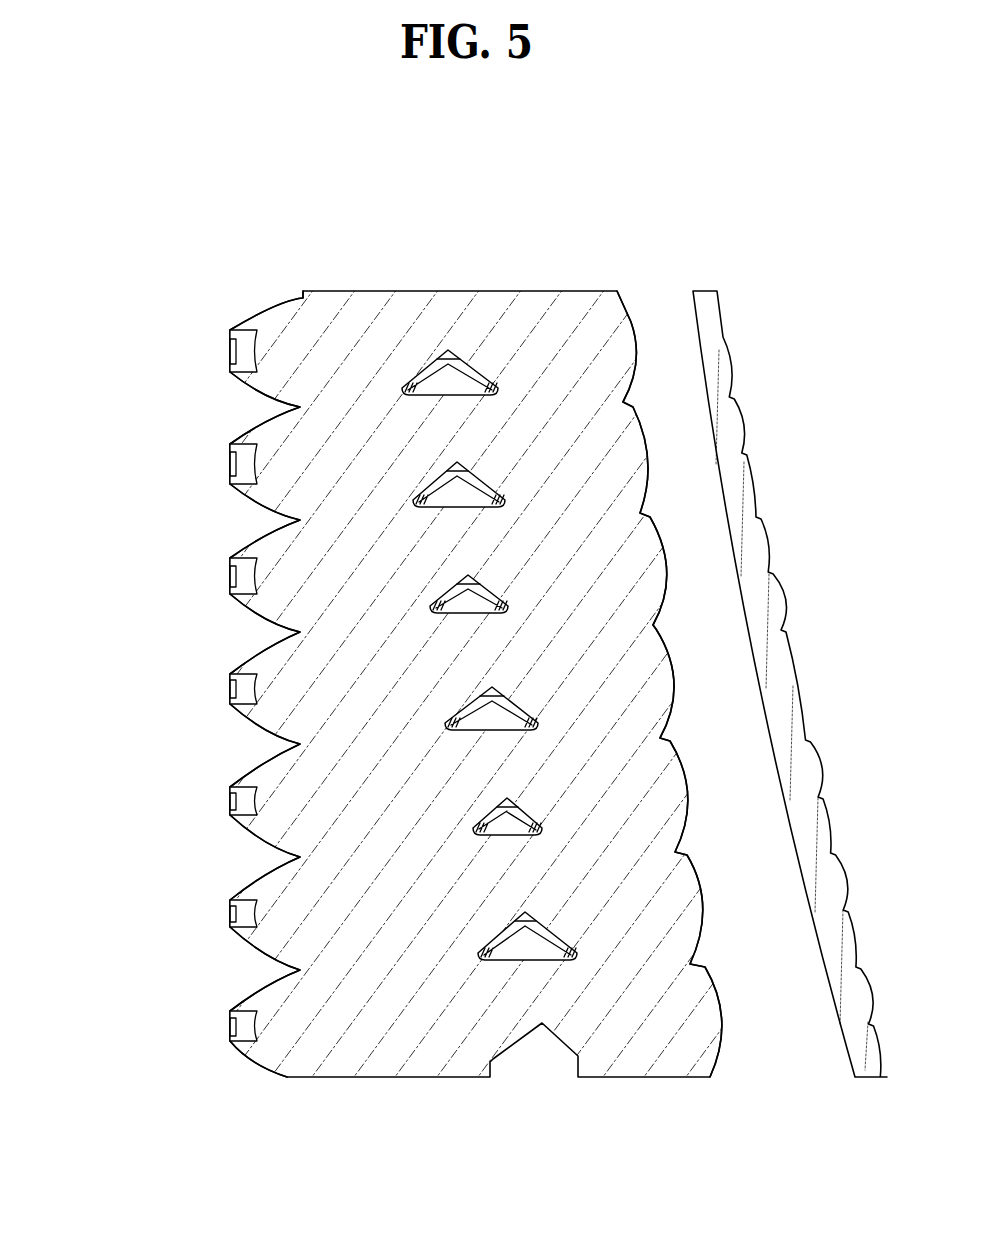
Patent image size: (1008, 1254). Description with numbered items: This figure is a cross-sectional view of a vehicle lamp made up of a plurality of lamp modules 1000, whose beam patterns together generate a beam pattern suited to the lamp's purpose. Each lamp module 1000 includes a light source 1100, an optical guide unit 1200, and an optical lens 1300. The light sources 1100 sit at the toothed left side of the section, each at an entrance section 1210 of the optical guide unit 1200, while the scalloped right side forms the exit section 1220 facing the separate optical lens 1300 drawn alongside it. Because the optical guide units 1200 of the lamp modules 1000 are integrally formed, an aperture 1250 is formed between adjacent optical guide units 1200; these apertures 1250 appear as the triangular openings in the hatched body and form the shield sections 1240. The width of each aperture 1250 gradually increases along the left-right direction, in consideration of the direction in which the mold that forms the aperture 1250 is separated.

The lamp module 1000 is at (184, 393).
The light source 1100 is at (232, 352).
The optical guide unit 1200 is at (353, 281).
The entrance section 1210 is at (262, 296).
The exit section 1220 is at (631, 320).
The shield section 1240 is at (440, 362).
The aperture 1250 is at (457, 378).
The optical lens 1300 is at (712, 316).